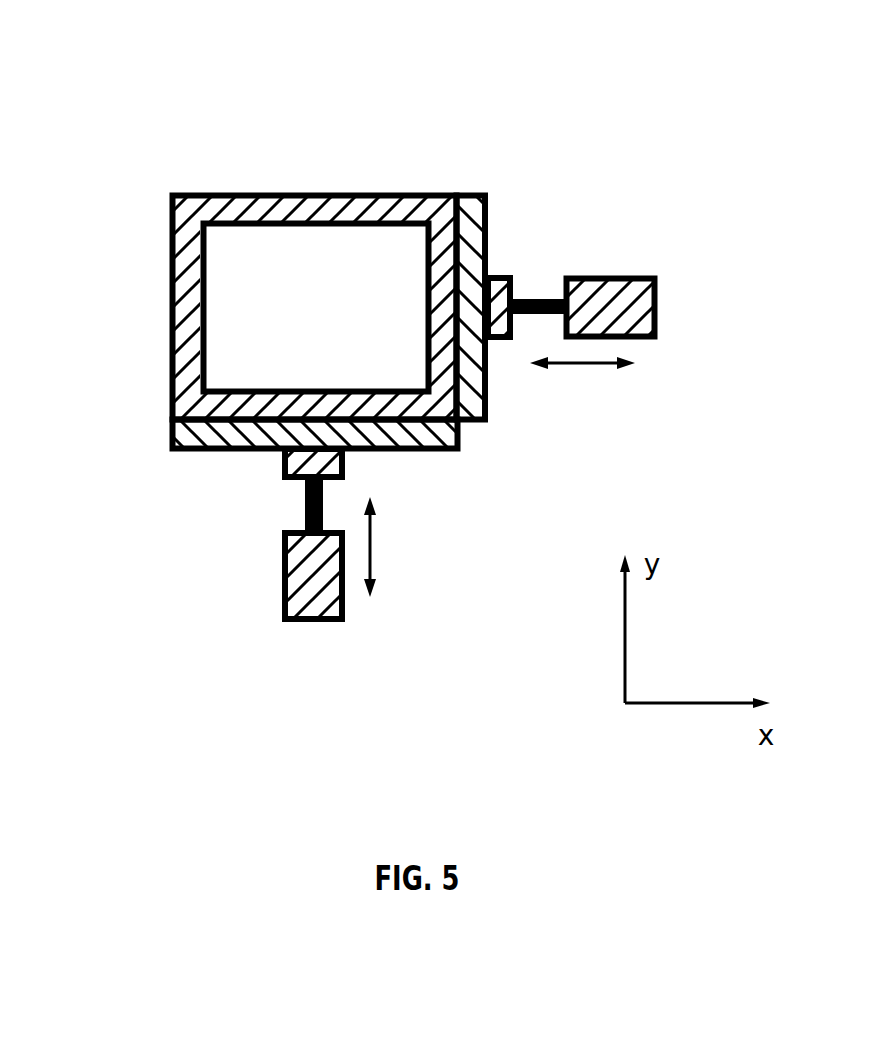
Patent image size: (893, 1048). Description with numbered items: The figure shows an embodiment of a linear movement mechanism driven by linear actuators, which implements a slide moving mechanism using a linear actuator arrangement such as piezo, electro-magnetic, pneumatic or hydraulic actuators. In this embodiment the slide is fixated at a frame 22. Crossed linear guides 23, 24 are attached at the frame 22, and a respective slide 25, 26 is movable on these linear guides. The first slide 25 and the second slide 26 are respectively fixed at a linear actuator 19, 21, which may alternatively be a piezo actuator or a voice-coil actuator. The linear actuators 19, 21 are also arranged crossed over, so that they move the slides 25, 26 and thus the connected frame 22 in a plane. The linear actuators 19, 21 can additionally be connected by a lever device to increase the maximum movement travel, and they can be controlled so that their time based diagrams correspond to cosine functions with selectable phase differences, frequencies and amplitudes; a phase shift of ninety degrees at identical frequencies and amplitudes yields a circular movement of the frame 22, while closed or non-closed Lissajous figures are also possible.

The linear actuator 19 is at (318, 585).
The linear actuator 21 is at (608, 300).
The frame 22 is at (312, 194).
The linear guide 23 is at (173, 451).
The linear guide 24 is at (478, 194).
The first slide 25 is at (310, 460).
The second slide 26 is at (505, 317).